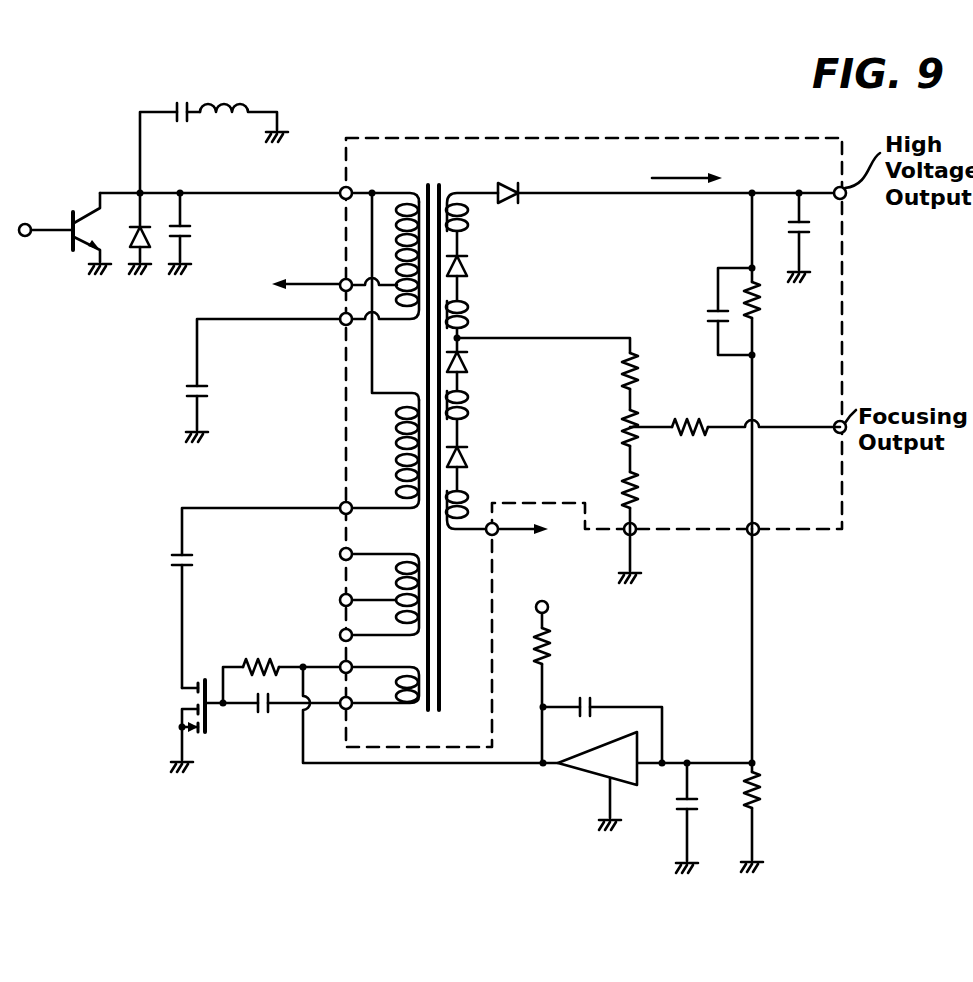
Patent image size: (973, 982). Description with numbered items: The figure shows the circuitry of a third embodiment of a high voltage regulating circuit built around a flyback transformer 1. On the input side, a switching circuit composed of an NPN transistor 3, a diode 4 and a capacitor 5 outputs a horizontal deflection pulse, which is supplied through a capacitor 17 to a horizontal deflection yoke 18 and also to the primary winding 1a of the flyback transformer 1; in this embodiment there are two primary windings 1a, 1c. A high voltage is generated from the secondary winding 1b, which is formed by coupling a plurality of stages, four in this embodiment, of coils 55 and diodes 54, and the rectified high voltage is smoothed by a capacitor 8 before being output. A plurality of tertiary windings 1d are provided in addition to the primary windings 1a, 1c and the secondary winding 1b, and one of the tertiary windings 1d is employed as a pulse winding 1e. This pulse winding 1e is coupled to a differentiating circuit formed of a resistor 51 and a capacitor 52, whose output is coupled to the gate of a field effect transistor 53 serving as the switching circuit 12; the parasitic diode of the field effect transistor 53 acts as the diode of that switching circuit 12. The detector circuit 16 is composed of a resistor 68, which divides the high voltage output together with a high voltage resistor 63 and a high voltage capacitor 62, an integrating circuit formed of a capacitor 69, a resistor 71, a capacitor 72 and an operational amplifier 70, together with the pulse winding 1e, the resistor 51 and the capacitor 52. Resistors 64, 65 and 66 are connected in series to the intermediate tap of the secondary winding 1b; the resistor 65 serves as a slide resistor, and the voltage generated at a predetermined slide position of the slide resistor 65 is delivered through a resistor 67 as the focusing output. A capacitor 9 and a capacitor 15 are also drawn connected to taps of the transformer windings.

The flyback transformer 1 is at (505, 136).
The primary winding 1a is at (396, 237).
The secondary winding 1b is at (461, 254).
The primary winding 1c is at (396, 434).
The tertiary windings 1d is at (394, 583).
The pulse winding 1e is at (390, 692).
The NPN transistor 3 is at (92, 212).
The diode 4 is at (132, 240).
The capacitor 5 is at (197, 233).
The capacitor 8 is at (812, 230).
The capacitor 9 is at (182, 392).
The switching circuit 12 is at (182, 697).
The capacitor 15 is at (172, 558).
The detector circuit 16 is at (790, 664).
The capacitor 17 is at (178, 102).
The horizontal deflection yoke 18 is at (225, 102).
The resistor 51 is at (252, 655).
The capacitor 52 is at (262, 715).
The field effect transistor 53 is at (165, 726).
The diodes 54 is at (466, 453).
The coils 55 is at (468, 506).
The high voltage capacitor 62 is at (710, 313).
The high voltage resistor 63 is at (772, 305).
The resistor 64 is at (643, 374).
The slide resistor 65 is at (618, 436).
The resistor 66 is at (648, 491).
The resistor 67 is at (690, 420).
The resistor 68 is at (762, 793).
The capacitor 69 is at (678, 806).
The operational amplifier 70 is at (587, 776).
The resistor 71 is at (560, 651).
The capacitor 72 is at (583, 697).